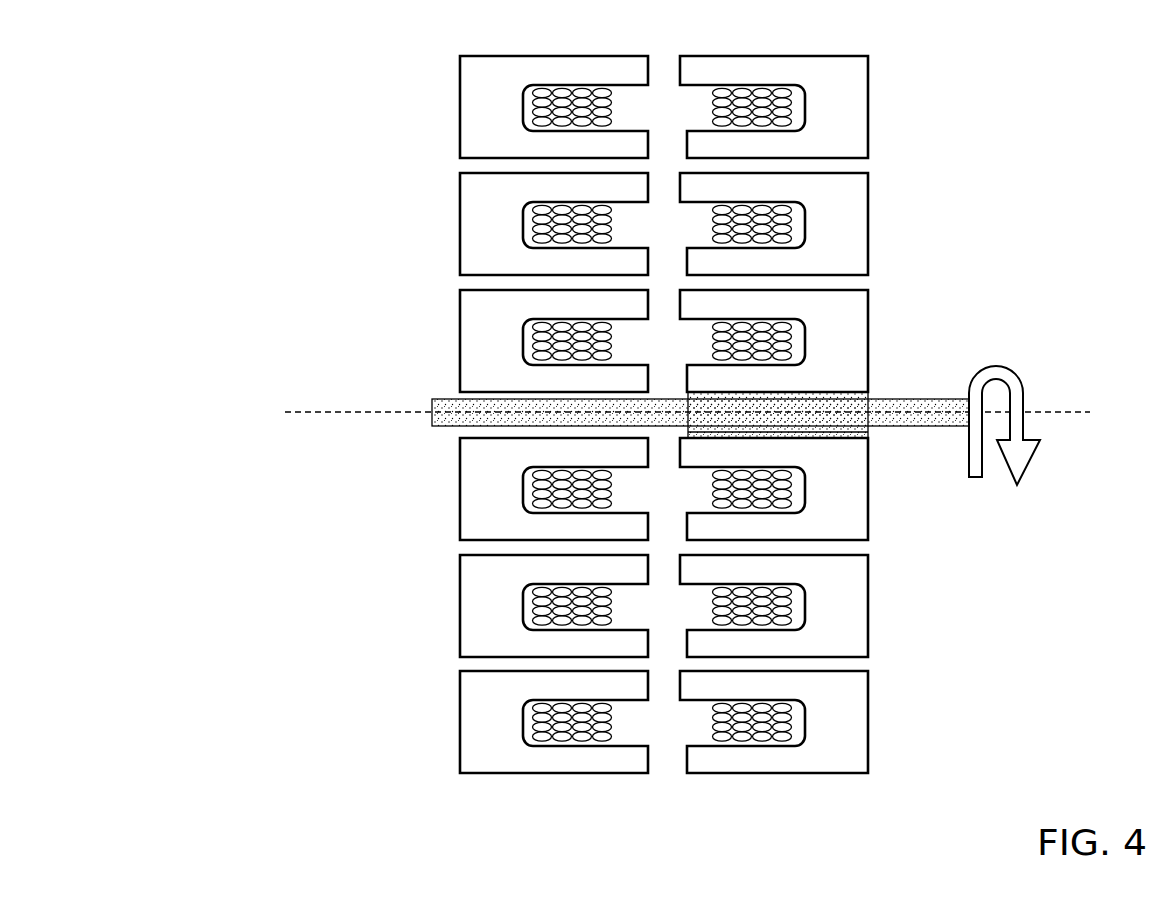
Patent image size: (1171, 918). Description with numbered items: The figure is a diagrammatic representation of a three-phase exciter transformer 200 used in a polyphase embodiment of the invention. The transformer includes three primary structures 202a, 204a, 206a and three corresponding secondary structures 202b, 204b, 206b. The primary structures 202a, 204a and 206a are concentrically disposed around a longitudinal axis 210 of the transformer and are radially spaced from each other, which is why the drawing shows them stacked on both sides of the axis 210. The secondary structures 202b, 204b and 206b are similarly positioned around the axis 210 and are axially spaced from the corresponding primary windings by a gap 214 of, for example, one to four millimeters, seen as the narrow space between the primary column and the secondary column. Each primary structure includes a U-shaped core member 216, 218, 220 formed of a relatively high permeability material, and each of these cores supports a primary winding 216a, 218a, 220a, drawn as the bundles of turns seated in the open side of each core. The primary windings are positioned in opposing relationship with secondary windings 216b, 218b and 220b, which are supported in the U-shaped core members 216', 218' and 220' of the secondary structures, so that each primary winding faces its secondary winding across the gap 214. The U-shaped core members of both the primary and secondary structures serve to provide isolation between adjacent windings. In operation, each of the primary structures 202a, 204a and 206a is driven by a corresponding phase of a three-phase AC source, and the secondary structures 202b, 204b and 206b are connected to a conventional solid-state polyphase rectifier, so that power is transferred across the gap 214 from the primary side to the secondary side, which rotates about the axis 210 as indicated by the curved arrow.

The three-phase exciter transformer 200 is at (974, 178).
The longitudinal axis 210 is at (1078, 413).
The gap 214 is at (659, 54).
The primary structure 202a is at (504, 441).
The secondary structure 202b is at (818, 414).
The primary structure 204a is at (504, 436).
The secondary structure 204b is at (818, 415).
The primary structure 206a is at (504, 435).
The secondary structure 206b is at (818, 415).
The U-shaped core member 216 is at (554, 107).
The U-shaped core member 216' is at (774, 107).
The U-shaped core member 218 is at (554, 224).
The U-shaped core member 218' is at (774, 224).
The U-shaped core member 220 is at (554, 341).
The U-shaped core member 220' is at (774, 341).
The primary winding 216a is at (532, 110).
The secondary winding 216b is at (800, 84).
The primary winding 218a is at (533, 236).
The secondary winding 218b is at (794, 203).
The primary winding 220a is at (532, 346).
The secondary winding 220b is at (792, 320).